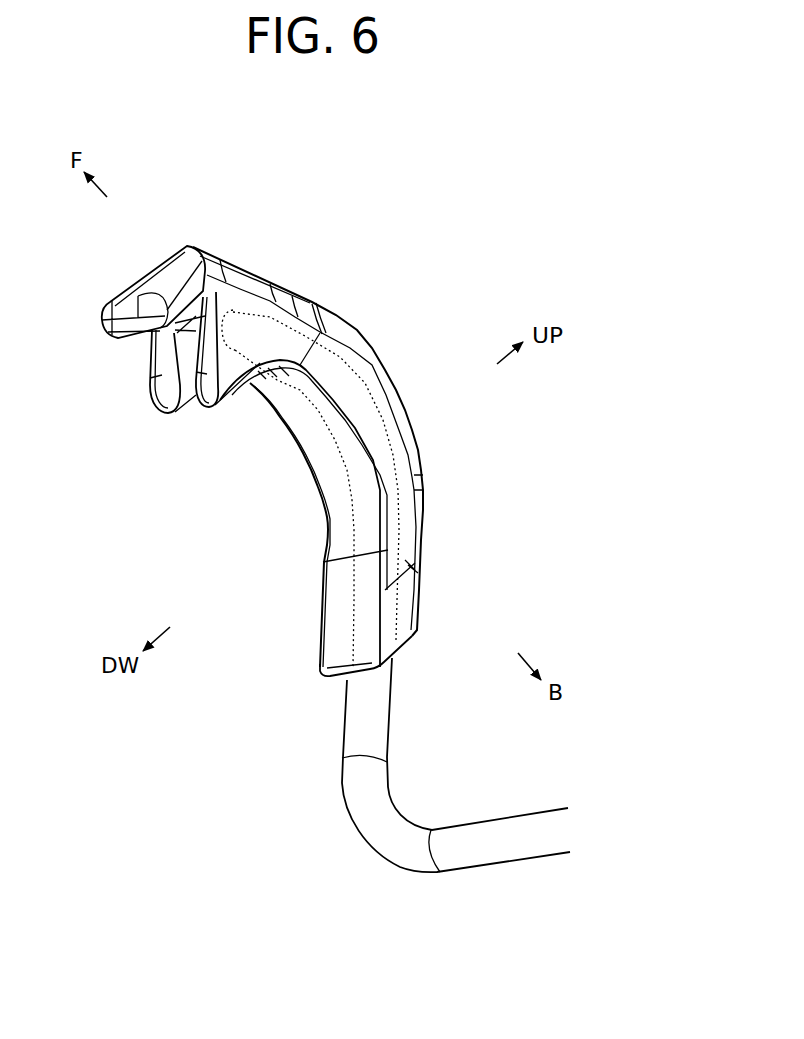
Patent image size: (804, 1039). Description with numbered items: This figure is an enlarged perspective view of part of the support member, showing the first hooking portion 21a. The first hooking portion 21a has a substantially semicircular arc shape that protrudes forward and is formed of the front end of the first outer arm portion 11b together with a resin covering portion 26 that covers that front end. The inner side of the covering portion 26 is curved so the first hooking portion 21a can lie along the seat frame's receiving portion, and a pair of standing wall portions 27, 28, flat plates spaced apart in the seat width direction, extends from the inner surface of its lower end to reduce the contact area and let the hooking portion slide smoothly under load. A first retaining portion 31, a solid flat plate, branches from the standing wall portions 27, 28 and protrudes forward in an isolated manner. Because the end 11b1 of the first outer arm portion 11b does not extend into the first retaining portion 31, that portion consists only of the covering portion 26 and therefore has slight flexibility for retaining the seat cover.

The first hooking portion 21a is at (282, 266).
The covering portion 26 is at (333, 472).
The standing wall portion 27 is at (180, 392).
The standing wall portion 28 is at (227, 377).
The first retaining portion 31 is at (140, 278).
The end of the first outer arm portion 11b1 is at (235, 312).
The first outer arm portion 11b is at (497, 827).